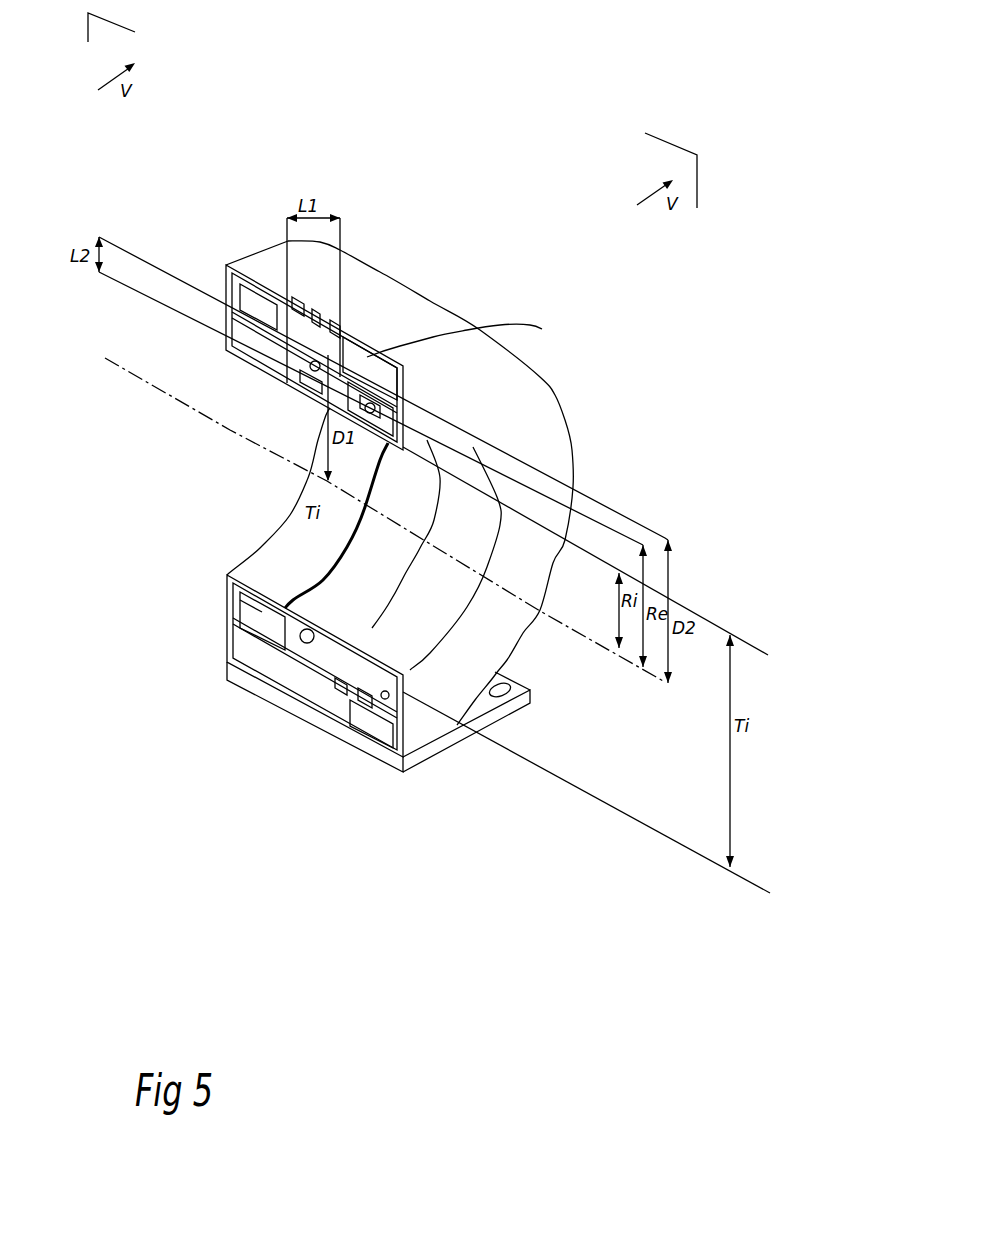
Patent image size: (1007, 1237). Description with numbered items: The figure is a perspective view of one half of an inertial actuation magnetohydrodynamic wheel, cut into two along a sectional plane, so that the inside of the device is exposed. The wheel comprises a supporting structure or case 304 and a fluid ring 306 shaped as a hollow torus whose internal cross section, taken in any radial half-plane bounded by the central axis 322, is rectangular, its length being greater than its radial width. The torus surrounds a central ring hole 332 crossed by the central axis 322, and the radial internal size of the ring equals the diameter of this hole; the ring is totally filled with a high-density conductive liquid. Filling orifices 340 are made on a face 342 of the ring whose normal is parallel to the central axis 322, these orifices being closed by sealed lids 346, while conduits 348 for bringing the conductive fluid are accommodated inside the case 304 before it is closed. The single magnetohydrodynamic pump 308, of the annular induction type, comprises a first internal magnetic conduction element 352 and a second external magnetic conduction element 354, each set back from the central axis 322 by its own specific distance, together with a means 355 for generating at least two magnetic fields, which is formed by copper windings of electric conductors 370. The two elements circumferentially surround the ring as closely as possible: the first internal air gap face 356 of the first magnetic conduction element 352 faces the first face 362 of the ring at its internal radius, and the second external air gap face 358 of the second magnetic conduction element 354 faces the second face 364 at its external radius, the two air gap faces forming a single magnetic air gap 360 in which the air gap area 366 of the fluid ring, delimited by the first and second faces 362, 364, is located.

The supporting structure or case 304 is at (477, 660).
The fluid ring 306 is at (310, 383).
The single magnetohydrodynamic pump 308 is at (188, 748).
The central axis 322 is at (627, 657).
The second central hole or ring hole 332 is at (280, 506).
The filling orifices 340 is at (340, 349).
The face 342 is at (378, 446).
The sealed lids 346 is at (380, 392).
The conduits 348 is at (386, 418).
The first internal magnetic conduction element 352 is at (318, 383).
The second external magnetic conduction element 354 is at (282, 382).
The means for generating at least two magnetic fields 355 is at (155, 628).
The first internal air gap face 356 is at (317, 612).
The second external air gap face 358 is at (227, 610).
The single magnetic air gap 360 is at (315, 390).
The first face 362 is at (303, 373).
The second face 364 is at (305, 301).
The air gap area 366 is at (330, 331).
The windings of electric conductors 370 is at (232, 300).